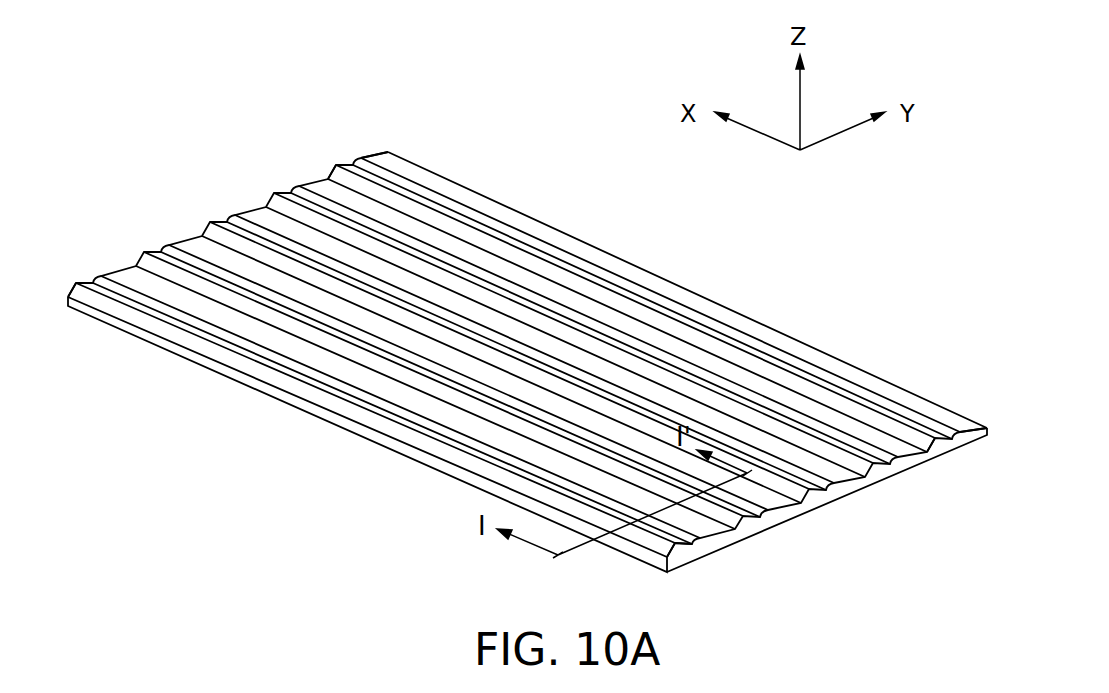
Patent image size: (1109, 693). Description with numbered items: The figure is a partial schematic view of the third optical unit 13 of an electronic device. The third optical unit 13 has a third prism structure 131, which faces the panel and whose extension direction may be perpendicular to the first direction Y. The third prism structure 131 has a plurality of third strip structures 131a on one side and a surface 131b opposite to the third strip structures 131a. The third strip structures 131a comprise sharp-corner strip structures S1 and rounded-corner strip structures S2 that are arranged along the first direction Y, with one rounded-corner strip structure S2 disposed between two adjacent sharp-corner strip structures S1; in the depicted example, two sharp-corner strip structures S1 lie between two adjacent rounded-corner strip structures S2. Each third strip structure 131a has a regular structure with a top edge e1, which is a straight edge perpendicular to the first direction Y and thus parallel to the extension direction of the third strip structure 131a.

The third optical unit 13 is at (527, 313).
The third prism structure 131 is at (527, 293).
The third strip structures 131a is at (644, 305).
The surface 131b is at (812, 512).
The sharp-corner strip structures S1 is at (377, 104).
The rounded-corner strip structures S2 is at (292, 195).
The top edge e1 is at (543, 217).